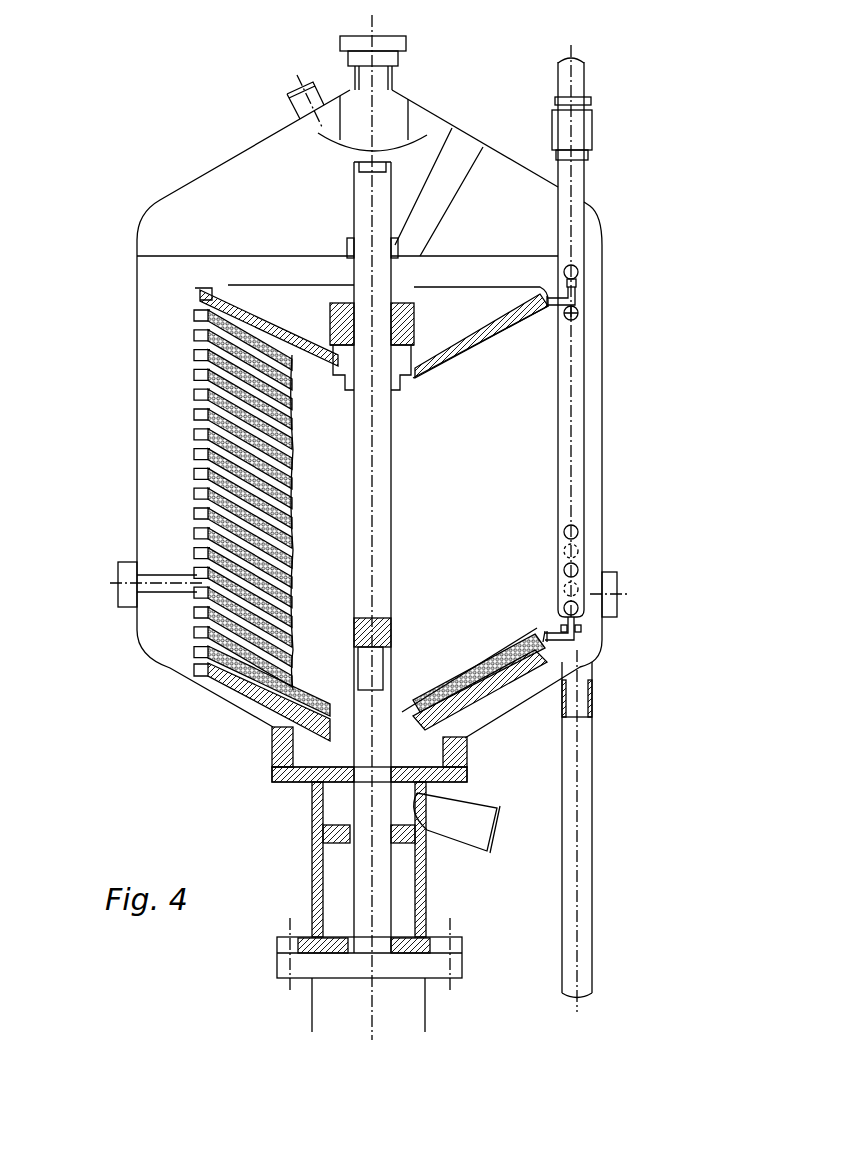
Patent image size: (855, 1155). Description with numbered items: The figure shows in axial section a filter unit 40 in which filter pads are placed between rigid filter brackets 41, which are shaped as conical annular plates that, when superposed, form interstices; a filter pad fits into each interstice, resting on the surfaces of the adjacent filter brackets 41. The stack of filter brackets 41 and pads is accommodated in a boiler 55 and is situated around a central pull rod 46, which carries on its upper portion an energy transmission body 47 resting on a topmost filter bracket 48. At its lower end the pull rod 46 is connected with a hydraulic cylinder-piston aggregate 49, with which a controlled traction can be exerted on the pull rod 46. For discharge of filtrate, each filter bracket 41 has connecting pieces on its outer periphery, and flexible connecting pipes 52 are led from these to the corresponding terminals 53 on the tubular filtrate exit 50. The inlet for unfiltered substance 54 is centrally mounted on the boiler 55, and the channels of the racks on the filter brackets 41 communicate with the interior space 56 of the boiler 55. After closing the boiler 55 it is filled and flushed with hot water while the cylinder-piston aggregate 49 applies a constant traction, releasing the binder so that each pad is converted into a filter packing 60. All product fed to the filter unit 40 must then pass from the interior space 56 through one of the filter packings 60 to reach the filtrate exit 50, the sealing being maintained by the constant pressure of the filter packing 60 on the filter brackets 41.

The filter unit 40 is at (260, 122).
The filter brackets 41 is at (199, 355).
The pull rod 46 is at (380, 463).
The energy transmission body 47 is at (333, 300).
The topmost filter bracket 48 is at (258, 302).
The hydraulic cylinder-piston aggregate 49 is at (412, 1028).
The filtrate exit 50 is at (580, 81).
The connecting pipes 52 is at (577, 634).
The terminals 53 is at (583, 569).
The inlet for unfiltered substance 54 is at (397, 113).
The boiler 55 is at (137, 283).
The interior space 56 is at (157, 392).
The filter packing 60 is at (198, 461).